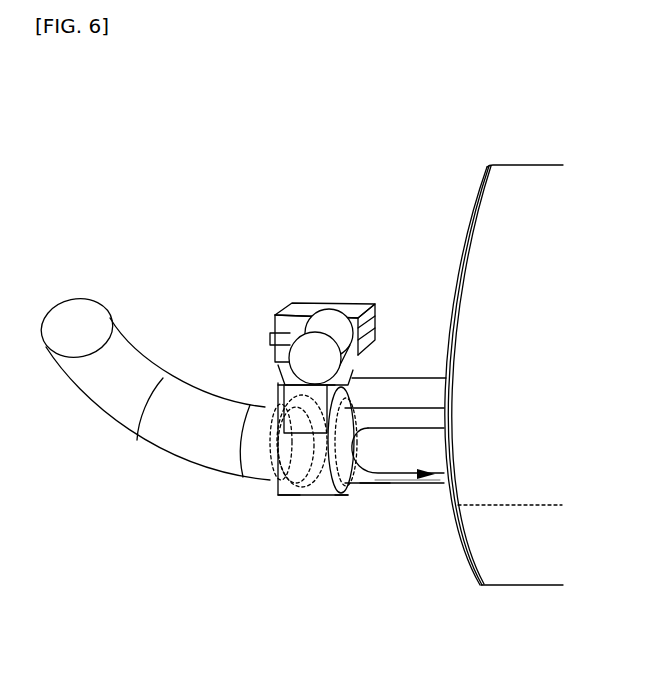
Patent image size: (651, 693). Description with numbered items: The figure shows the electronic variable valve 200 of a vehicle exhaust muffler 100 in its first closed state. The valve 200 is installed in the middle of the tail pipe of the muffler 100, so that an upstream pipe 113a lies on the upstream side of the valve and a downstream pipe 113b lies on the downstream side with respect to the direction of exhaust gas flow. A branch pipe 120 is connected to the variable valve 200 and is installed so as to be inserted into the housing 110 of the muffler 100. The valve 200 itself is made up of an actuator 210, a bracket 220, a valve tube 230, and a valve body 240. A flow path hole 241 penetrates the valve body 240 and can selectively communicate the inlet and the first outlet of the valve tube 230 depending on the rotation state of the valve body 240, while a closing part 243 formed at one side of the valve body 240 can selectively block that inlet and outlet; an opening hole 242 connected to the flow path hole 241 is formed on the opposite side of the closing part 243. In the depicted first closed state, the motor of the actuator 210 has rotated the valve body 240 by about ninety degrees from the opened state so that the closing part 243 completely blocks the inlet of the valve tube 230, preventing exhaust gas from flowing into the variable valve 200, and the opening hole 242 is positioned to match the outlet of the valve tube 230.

The muffler 100 is at (464, 361).
The housing 110 is at (525, 166).
The branch pipe 120 is at (408, 377).
The upstream pipe 113a is at (418, 485).
The downstream pipe 113b is at (153, 428).
The electronic variable valve 200 is at (294, 385).
The actuator 210 is at (283, 302).
The bracket 220 is at (274, 392).
The valve tube 230 is at (318, 497).
The valve body 240 is at (349, 505).
The flow path hole 241 is at (288, 495).
The opening hole 242 is at (250, 480).
The closing part 243 is at (373, 486).